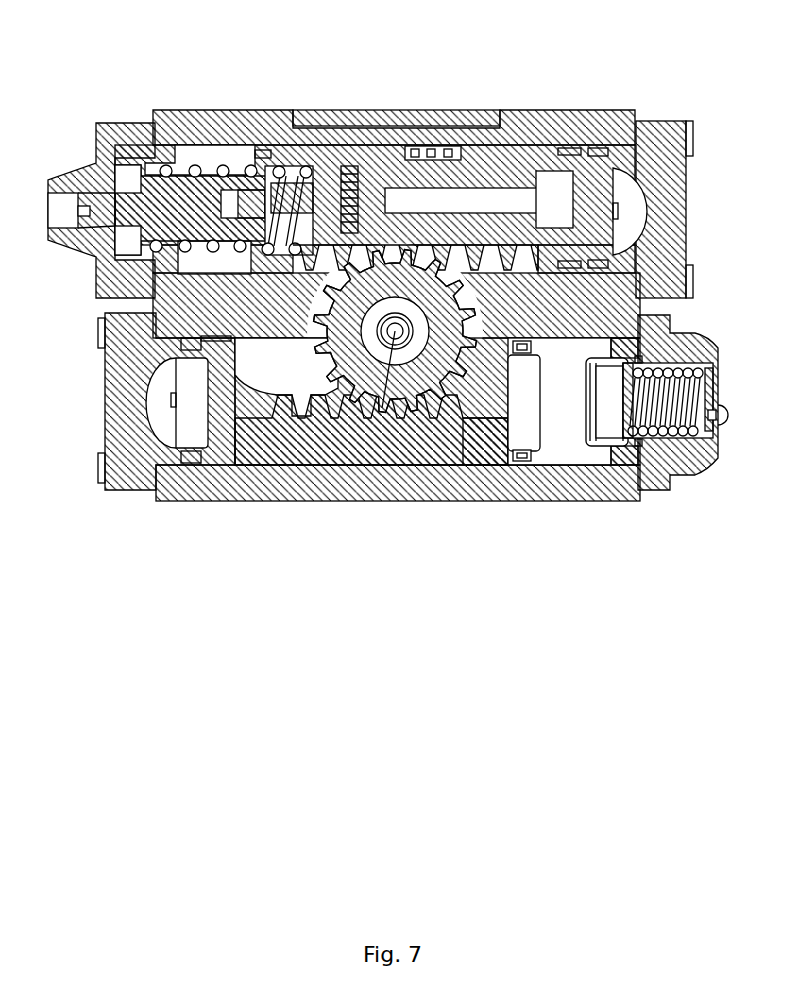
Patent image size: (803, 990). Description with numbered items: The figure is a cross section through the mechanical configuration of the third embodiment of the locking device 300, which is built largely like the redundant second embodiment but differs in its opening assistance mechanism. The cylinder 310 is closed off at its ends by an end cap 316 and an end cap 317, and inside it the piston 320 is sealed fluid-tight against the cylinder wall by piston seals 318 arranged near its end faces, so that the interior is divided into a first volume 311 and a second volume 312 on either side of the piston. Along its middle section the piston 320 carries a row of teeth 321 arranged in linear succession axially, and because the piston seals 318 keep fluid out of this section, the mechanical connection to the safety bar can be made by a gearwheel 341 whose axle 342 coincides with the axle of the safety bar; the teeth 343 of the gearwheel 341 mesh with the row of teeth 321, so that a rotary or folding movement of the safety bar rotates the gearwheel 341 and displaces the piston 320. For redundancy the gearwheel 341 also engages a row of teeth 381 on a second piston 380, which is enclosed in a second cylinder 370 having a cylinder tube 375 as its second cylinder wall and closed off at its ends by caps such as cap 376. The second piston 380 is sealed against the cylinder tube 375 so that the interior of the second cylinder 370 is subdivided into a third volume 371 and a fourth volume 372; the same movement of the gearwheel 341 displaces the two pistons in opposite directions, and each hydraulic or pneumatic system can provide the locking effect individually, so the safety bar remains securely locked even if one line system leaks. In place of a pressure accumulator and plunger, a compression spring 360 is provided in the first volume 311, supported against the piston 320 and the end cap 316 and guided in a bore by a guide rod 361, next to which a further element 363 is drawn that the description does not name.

The locking device 300 is at (265, 541).
The cylinder 310 is at (233, 102).
The first volume 311 is at (179, 150).
The second volume 312 is at (645, 113).
The end cap 316 is at (89, 115).
The end cap 317 is at (633, 174).
The piston seals 318 is at (308, 102).
The piston 320 is at (541, 102).
The row of teeth 321 is at (486, 102).
The gearwheel 341 is at (350, 482).
The axle 342 is at (323, 464).
The teeth 343 is at (403, 479).
The compression spring 360 is at (198, 137).
The guide rod 361 is at (333, 135).
The stop element 363 is at (433, 138).
The second cylinder 370 is at (510, 466).
The third volume 371 is at (573, 489).
The fourth volume 372 is at (178, 418).
The cylinder tube 375 is at (196, 482).
The cap 376 is at (101, 472).
The second piston 380 is at (463, 487).
The row of teeth 381 is at (246, 484).